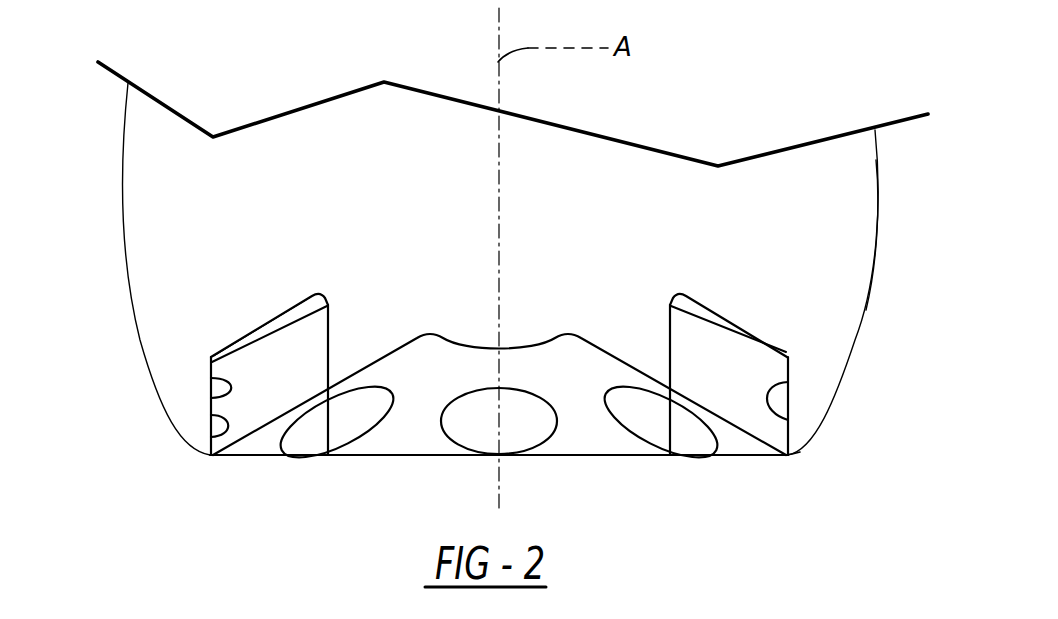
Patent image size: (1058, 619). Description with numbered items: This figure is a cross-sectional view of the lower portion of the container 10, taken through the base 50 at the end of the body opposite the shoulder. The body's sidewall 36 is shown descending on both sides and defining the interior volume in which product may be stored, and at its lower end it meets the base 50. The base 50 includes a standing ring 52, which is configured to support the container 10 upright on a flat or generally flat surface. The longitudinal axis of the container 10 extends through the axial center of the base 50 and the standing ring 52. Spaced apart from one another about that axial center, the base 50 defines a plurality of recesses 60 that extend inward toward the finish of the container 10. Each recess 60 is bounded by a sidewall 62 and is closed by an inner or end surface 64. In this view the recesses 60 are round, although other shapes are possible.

The container 10 is at (80, 115).
The sidewall 36 is at (878, 215).
The base 50 is at (250, 457).
The standing ring 52 is at (778, 456).
The recesses 60 is at (211, 397).
The sidewall 62 is at (333, 335).
The inner or end surface 64 is at (293, 305).